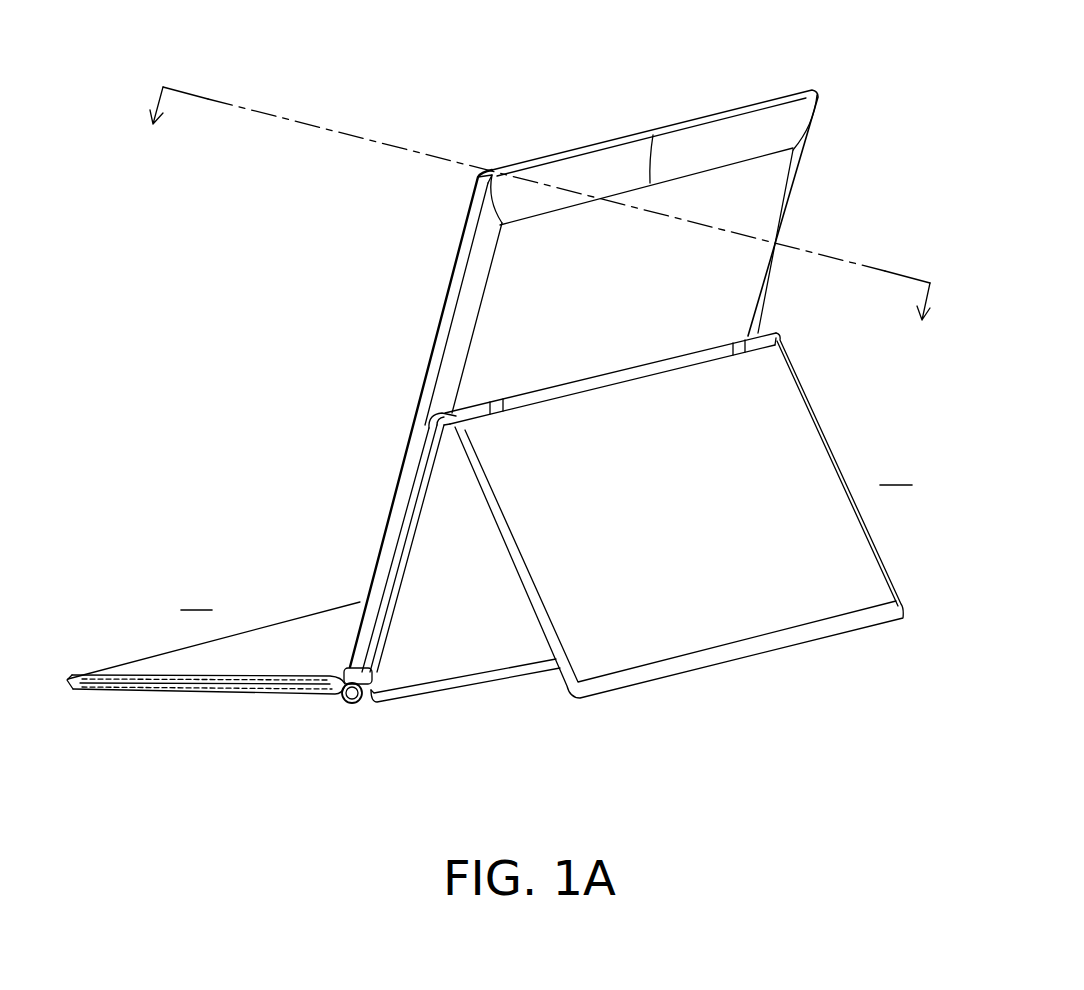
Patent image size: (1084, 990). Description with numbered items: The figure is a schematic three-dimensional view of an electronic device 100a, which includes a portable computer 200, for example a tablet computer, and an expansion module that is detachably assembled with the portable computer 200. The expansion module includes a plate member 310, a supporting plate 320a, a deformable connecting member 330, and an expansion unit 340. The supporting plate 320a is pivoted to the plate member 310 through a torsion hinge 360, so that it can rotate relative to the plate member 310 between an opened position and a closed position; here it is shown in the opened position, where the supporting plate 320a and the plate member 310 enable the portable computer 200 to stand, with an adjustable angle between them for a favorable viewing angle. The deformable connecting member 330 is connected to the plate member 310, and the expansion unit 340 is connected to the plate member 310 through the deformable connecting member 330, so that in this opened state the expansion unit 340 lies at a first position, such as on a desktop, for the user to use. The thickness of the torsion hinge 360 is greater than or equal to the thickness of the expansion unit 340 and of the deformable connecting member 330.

The electronic device 100a is at (498, 406).
The portable computer 200 is at (757, 185).
The plate member 310 is at (473, 645).
The supporting plate 320a is at (637, 637).
The deformable connecting member 330 is at (340, 706).
The expansion unit 340 is at (192, 692).
The torsion hinge 360 is at (443, 413).